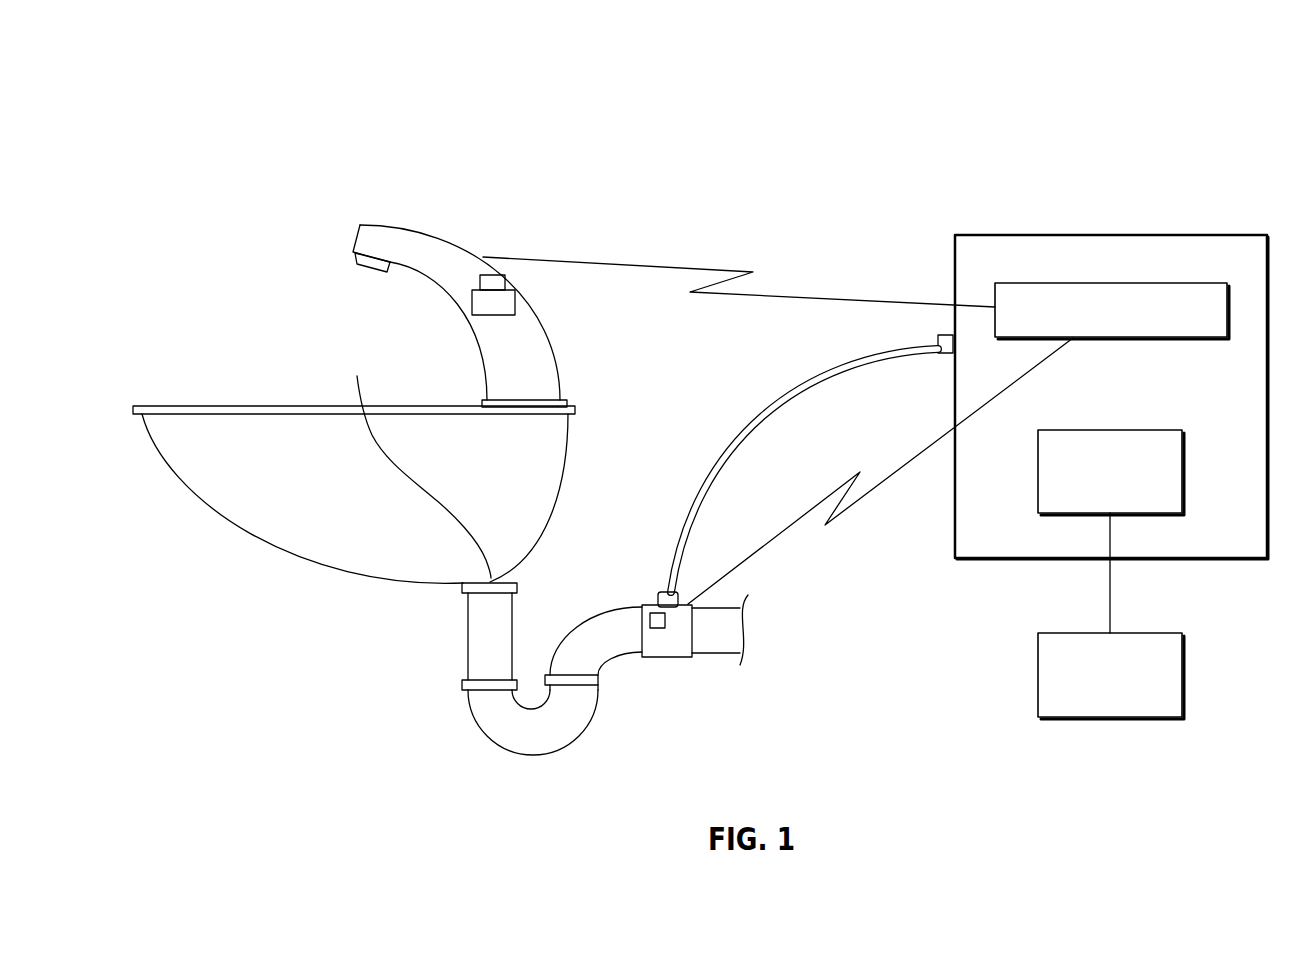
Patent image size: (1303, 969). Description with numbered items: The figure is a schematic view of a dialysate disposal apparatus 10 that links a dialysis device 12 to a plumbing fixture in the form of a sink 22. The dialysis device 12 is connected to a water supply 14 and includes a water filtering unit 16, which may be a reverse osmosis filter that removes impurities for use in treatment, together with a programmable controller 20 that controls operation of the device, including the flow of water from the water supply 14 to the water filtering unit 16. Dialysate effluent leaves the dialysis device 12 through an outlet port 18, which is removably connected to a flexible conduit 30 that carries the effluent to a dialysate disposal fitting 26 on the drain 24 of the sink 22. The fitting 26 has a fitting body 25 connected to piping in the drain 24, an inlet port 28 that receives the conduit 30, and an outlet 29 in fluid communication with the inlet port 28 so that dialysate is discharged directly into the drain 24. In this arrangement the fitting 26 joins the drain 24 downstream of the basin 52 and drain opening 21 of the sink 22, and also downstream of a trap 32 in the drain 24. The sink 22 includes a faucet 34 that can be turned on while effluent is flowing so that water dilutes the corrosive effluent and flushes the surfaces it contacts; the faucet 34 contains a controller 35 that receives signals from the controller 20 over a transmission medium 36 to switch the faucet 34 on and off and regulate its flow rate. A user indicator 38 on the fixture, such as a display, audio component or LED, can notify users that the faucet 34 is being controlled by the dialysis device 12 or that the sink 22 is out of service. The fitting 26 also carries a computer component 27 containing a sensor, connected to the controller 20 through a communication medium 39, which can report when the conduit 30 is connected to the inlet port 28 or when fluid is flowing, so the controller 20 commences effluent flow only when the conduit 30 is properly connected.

The dialysate disposal apparatus 10 is at (1130, 102).
The dialysis device 12 is at (1097, 235).
The water supply 14 is at (1093, 633).
The water filtering unit 16 is at (1095, 430).
The outlet port 18 is at (947, 353).
The controller 20 is at (1053, 283).
The drain opening 21 is at (417, 463).
The sink 22 is at (280, 535).
The drain 24 is at (468, 647).
The fitting body 25 is at (673, 658).
The dialysate disposal fitting 26 is at (658, 642).
The computer component 27 is at (643, 622).
The inlet port 28 is at (658, 602).
The outlet 29 is at (693, 655).
The conduit 30 is at (755, 403).
The trap 32 is at (510, 740).
The faucet 34 is at (408, 225).
The controller 35 is at (495, 282).
The transmission medium 36 is at (770, 292).
The user indicator 38 is at (488, 317).
The communication medium 39 is at (863, 497).
The basin 52 is at (258, 453).